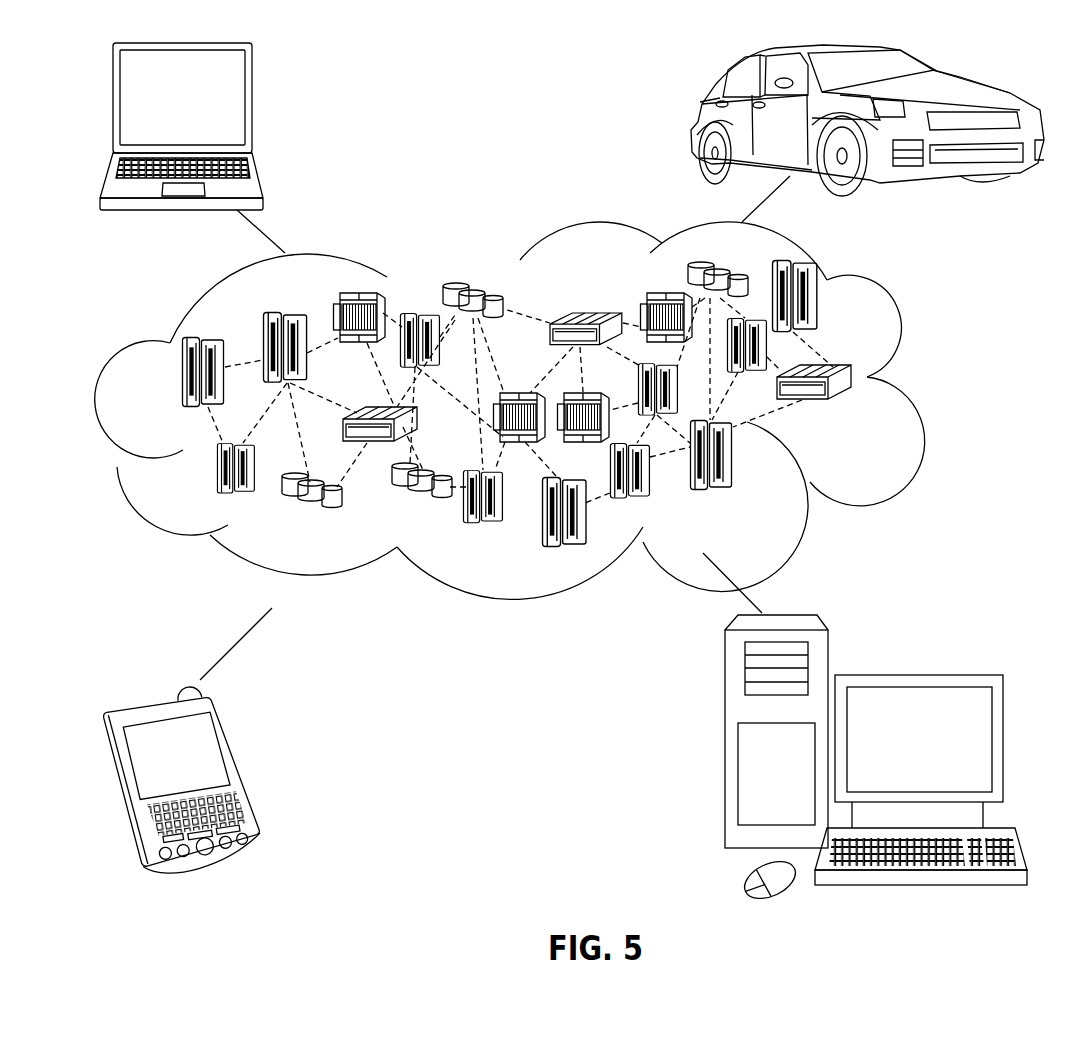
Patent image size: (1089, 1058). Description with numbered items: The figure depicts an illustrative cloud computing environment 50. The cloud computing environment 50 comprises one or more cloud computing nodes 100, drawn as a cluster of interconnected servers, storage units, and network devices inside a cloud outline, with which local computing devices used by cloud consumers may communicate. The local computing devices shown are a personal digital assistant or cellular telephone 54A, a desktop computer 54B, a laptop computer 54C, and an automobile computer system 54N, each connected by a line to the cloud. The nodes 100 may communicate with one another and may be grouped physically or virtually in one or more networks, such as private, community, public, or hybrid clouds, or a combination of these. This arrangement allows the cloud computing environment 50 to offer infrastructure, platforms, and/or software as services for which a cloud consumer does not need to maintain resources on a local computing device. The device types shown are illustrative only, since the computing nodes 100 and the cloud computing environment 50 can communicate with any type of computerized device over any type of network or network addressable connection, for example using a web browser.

The cloud computing environment 50 is at (913, 384).
The cloud computing nodes 100 is at (857, 413).
The personal digital assistant or cellular telephone 54A is at (242, 769).
The desktop computer 54B is at (915, 673).
The laptop computer 54C is at (252, 107).
The automobile computer system 54N is at (692, 124).